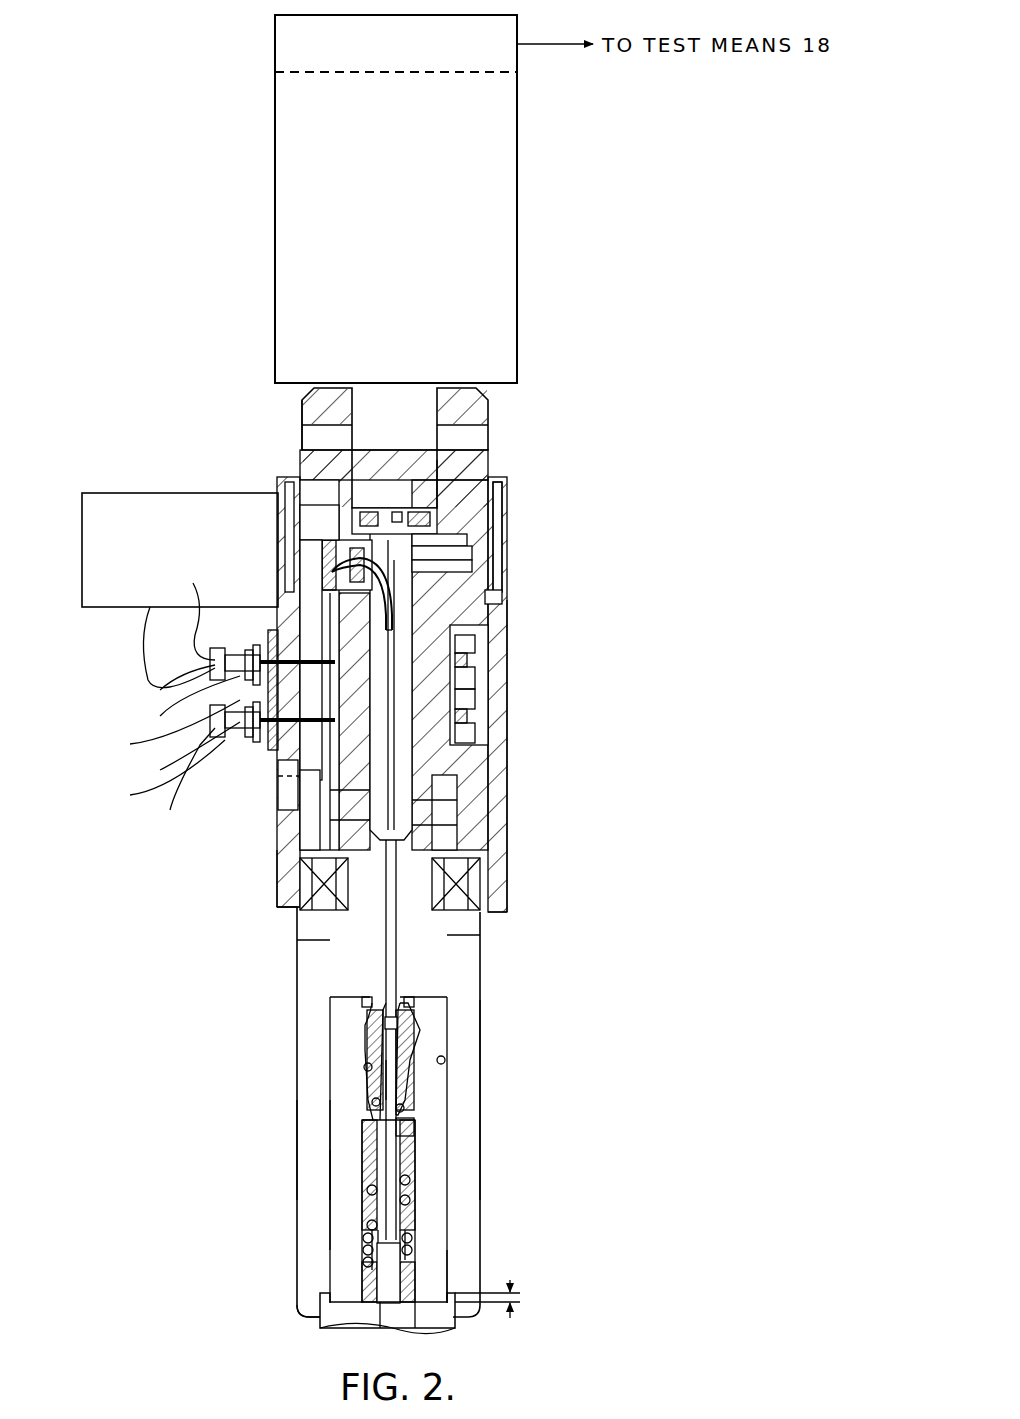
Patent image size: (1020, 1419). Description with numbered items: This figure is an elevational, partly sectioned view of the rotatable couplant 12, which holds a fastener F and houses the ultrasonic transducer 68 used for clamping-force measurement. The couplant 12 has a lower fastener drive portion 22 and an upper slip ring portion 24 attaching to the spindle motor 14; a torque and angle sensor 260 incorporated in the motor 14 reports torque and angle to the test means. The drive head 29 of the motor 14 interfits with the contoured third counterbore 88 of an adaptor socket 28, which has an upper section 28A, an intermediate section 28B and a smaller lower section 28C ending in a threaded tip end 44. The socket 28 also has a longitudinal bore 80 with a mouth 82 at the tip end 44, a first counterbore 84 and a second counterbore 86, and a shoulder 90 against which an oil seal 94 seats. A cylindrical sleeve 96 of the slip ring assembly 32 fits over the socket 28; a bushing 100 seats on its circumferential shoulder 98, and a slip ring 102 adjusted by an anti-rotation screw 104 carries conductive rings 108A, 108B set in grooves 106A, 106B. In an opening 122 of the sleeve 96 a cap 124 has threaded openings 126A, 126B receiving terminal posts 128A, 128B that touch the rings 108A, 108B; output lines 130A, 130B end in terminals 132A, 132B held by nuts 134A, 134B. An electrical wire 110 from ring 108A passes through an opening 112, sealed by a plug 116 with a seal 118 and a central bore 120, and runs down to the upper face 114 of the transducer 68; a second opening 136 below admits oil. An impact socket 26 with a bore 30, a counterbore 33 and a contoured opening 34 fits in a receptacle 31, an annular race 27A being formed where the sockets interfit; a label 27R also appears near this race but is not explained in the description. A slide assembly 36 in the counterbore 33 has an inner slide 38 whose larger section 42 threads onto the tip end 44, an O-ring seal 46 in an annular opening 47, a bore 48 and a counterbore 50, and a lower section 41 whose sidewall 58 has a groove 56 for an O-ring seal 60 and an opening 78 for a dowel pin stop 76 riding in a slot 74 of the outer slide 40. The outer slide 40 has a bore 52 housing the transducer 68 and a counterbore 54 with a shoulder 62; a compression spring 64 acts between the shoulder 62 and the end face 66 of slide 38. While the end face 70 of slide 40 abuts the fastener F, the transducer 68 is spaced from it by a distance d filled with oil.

The torque and angle sensor 260 is at (300, 72).
The spindle motor 14 is at (604, 197).
The adaptor socket 28 is at (490, 410).
The upper section of adaptor socket 28A is at (301, 411).
The intermediate section of adaptor socket 28B is at (468, 686).
The lower section of adaptor socket 28C is at (279, 888).
The drive head 29 is at (478, 470).
The bushing 100 is at (303, 478).
The seal 118 is at (378, 522).
The opening 112 is at (395, 520).
The electrical wire 110 is at (376, 582).
The oil seal 94 is at (462, 535).
The shoulder 90 is at (476, 555).
The second counterbore 86 is at (490, 568).
The third counterbore 88 is at (502, 488).
The circumferential shoulder 98 is at (503, 603).
The central bore of plug 120 is at (303, 522).
The plug 116 is at (302, 547).
The second opening 136 is at (322, 812).
The anti-rotation screw 104 is at (487, 640).
The electrically conductive ring 108A is at (470, 655).
The groove 106A is at (468, 668).
The slip ring 102 is at (470, 715).
The groove 106B is at (468, 731).
The electrically conductive ring 108B is at (470, 752).
The upper slip ring portion 24 is at (660, 641).
The couplant 12 is at (657, 796).
The electrical terminal 132A is at (180, 576).
The electrical output line 130A is at (185, 665).
The electrical output line 130B is at (160, 690).
The electrical terminal 128A is at (160, 716).
The nut 134A is at (130, 744).
The electrical terminal 128B is at (160, 770).
The nut 134B is at (130, 795).
The electrical terminal 132B is at (166, 774).
The threaded opening 126A is at (262, 640).
The threaded opening 126B is at (263, 745).
The cap 124 is at (262, 773).
The opening 122 is at (268, 800).
The first counterbore 84 is at (452, 795).
The radial bearing 27R is at (296, 906).
The annular race 27A is at (315, 930).
The longitudinal bore 80 is at (482, 888).
The cylindrical sleeve 96 is at (527, 838).
The receptacle 31 is at (290, 906).
The slip ring assembly 32 is at (205, 872).
The concentric bore 30 is at (462, 935).
The O-ring oil seal 46 is at (362, 992).
The tip end 44 is at (404, 1004).
The annular opening 47 is at (362, 1012).
The inner slide 38 is at (422, 1028).
The larger outer diameter section 42 is at (365, 1036).
The mouth 82 is at (425, 1046).
The counterbore 33 is at (446, 1064).
The counterbore 50 is at (365, 1068).
The opening 78 is at (402, 1110).
The lower fastener drive portion 22 is at (592, 1097).
The bore 48 is at (372, 1103).
The dowel pin stop 76 is at (416, 1136).
The longitudinal slot 74 is at (416, 1152).
The impact socket 26 is at (296, 1143).
The lower section of inner slide 41 is at (345, 1160).
The slide assembly 36 is at (345, 1185).
The outer sidewall 58 is at (411, 1181).
The annular groove 56 is at (411, 1200).
The O-ring seal 60 is at (366, 1190).
The end face 66 is at (410, 1240).
The upper face of transducer 114 is at (364, 1236).
The counterbore 54 is at (364, 1226).
The compression spring 64 is at (418, 1272).
The shoulder 62 is at (360, 1266).
The bore 52 is at (390, 1305).
The outer slide 40 is at (452, 1292).
The fastener F is at (318, 1326).
The opening 34 is at (300, 1310).
The piezoelectric transducer 68 is at (382, 1290).
The end face 70 is at (425, 1302).
The distance d is at (487, 1310).